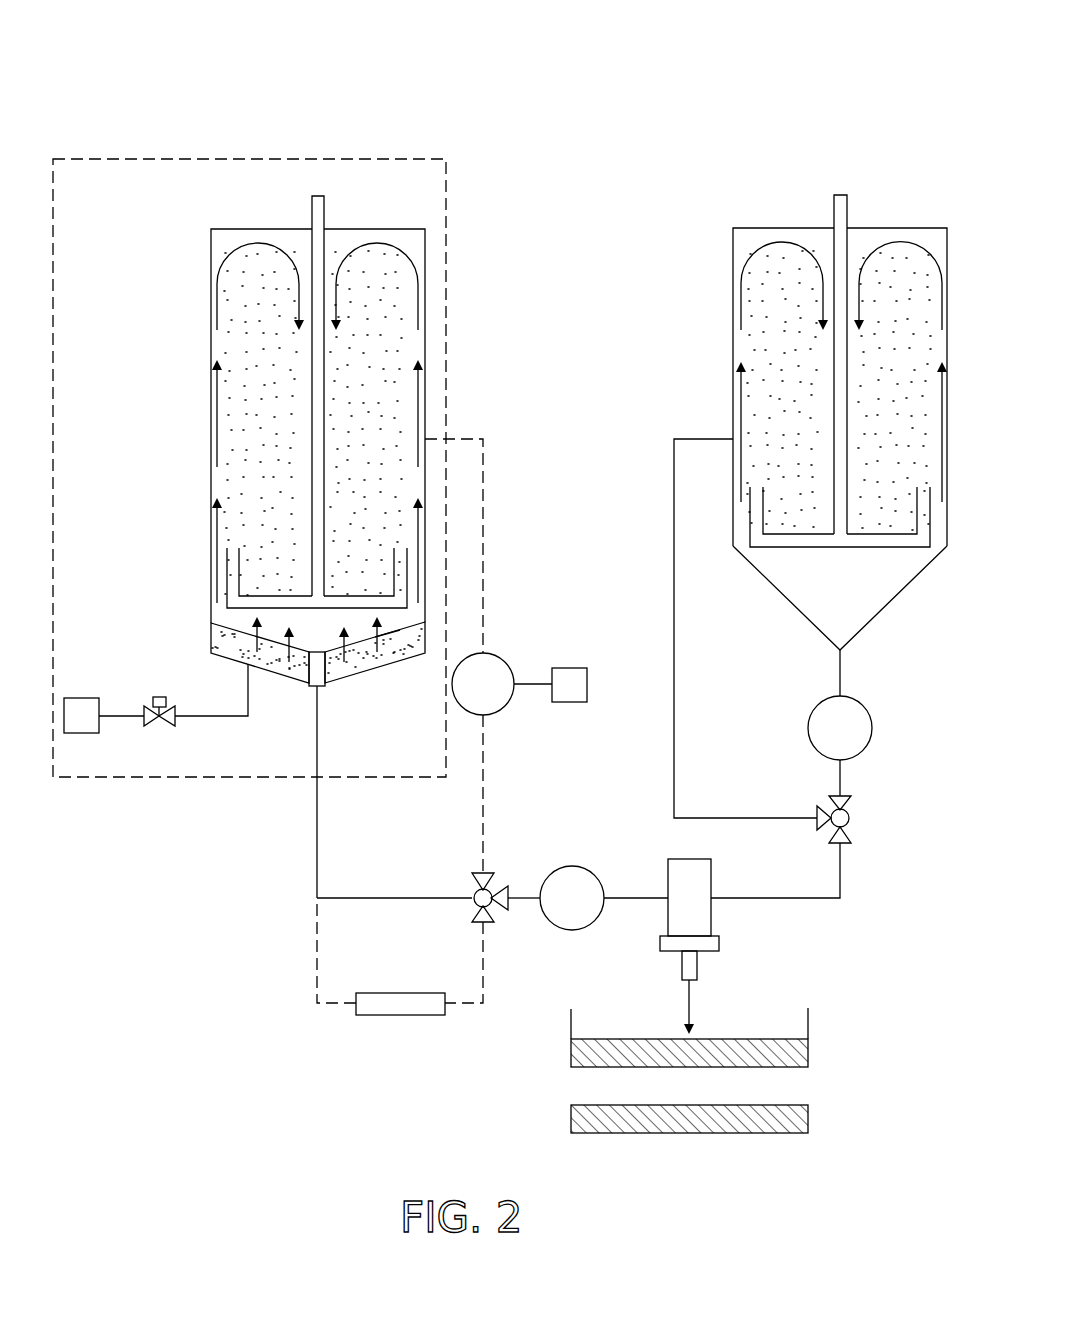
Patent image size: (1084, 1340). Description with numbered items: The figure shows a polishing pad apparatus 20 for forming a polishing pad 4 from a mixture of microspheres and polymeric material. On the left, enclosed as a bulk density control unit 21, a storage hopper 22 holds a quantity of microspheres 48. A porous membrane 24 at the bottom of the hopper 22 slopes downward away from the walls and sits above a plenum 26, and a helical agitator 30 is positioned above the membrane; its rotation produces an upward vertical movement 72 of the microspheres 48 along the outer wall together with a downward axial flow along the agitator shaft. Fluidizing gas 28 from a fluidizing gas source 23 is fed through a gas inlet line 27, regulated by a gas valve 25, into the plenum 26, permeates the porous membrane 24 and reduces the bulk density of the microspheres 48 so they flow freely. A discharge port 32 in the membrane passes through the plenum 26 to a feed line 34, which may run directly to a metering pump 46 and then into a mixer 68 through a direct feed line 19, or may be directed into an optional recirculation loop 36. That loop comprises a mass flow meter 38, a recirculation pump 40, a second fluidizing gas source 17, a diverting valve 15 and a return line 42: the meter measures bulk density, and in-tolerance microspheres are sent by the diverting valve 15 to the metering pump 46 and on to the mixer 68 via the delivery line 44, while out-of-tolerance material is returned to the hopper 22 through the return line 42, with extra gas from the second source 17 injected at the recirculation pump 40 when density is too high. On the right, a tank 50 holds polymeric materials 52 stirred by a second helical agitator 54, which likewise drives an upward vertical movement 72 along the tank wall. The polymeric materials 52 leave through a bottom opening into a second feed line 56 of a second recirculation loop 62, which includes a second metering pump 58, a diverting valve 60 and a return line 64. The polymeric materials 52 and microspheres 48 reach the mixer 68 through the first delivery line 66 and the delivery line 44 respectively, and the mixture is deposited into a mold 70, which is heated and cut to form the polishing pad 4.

The polishing pad 4 is at (800, 1105).
The diverting valve 15 is at (478, 873).
The second fluidizing gas source 17 is at (572, 671).
The direct feed line 19 is at (375, 898).
The polishing pad apparatus 20 is at (493, 122).
The bulk density control unit 21 is at (88, 159).
The storage hopper 22 is at (425, 290).
The fluidizing gas source 23 is at (88, 697).
The porous membrane 24 is at (217, 625).
The gas valve 25 is at (159, 697).
The plenum 26 is at (392, 660).
The gas inlet line 27 is at (207, 716).
The fluidizing gas 28 is at (225, 653).
The helical agitator 30 is at (312, 493).
The discharge port 32 is at (322, 670).
The feed line 34 is at (317, 858).
The recirculation loop 36 is at (512, 628).
The mass flow meter 38 is at (398, 993).
The recirculation pump 40 is at (502, 706).
The return line 42 is at (462, 440).
The delivery line 44 is at (640, 898).
The metering pump 46 is at (565, 920).
The microspheres 48 is at (260, 262).
The tank 50 is at (733, 250).
The polymeric materials 52 is at (765, 322).
The second helical agitator 54 is at (848, 520).
The second feed line 56 is at (840, 672).
The second metering pump 58 is at (808, 728).
The diverting valve 60 is at (862, 818).
The second recirculation loop 62 is at (655, 582).
The return line 64 is at (695, 440).
The first delivery line 66 is at (785, 898).
The mixer 68 is at (668, 912).
The mold 70 is at (808, 1010).
The upward vertical movement 72 is at (370, 243).